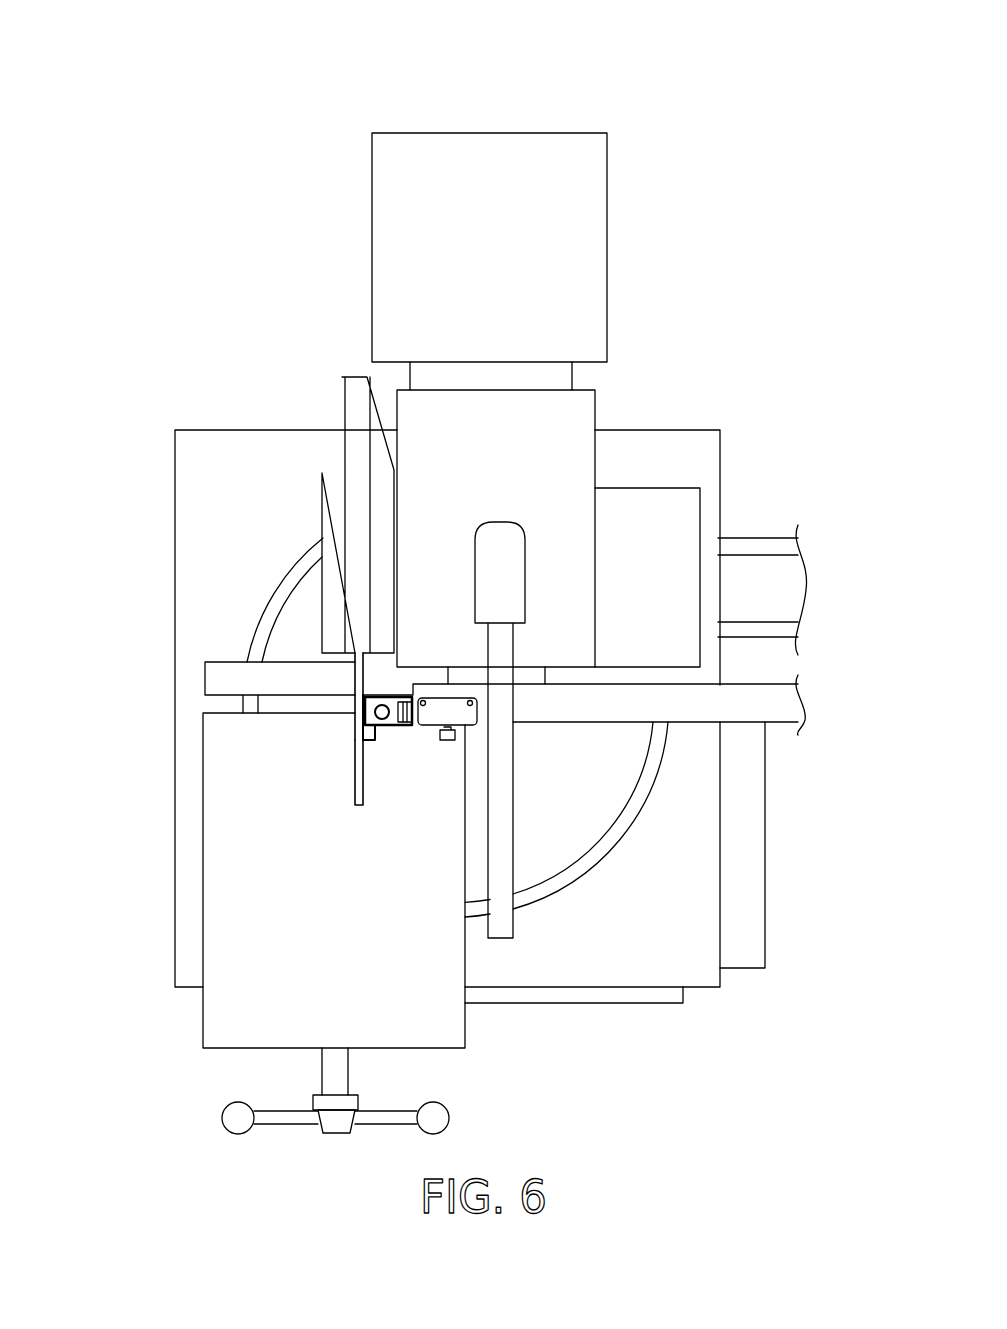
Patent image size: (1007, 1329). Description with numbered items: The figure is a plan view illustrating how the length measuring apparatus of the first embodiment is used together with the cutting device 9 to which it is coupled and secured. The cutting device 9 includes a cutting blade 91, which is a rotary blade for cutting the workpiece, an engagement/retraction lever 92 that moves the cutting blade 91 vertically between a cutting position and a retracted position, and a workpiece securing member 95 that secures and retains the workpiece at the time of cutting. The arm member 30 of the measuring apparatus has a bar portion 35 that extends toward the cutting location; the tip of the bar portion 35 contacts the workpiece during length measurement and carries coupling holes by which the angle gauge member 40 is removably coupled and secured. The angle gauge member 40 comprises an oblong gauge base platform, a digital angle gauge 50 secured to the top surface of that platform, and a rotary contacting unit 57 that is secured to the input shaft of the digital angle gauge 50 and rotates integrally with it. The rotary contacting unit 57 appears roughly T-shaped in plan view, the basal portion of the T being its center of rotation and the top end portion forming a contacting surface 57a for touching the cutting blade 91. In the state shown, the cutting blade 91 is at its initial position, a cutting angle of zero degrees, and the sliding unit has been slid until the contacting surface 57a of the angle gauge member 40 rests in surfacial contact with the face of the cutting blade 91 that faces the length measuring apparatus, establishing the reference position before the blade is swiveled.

The cutting device 9 is at (502, 132).
The arm member 30 is at (763, 684).
The bar portion 35 is at (570, 722).
The angle gauge member 40 is at (455, 742).
The digital angle gauge 50 is at (430, 722).
The rotary contacting unit 57 is at (367, 742).
The contacting surface 57a is at (357, 718).
The cutting blade 91 is at (357, 805).
The engagement/retraction lever 92 is at (498, 645).
The workpiece securing member 95 is at (203, 930).